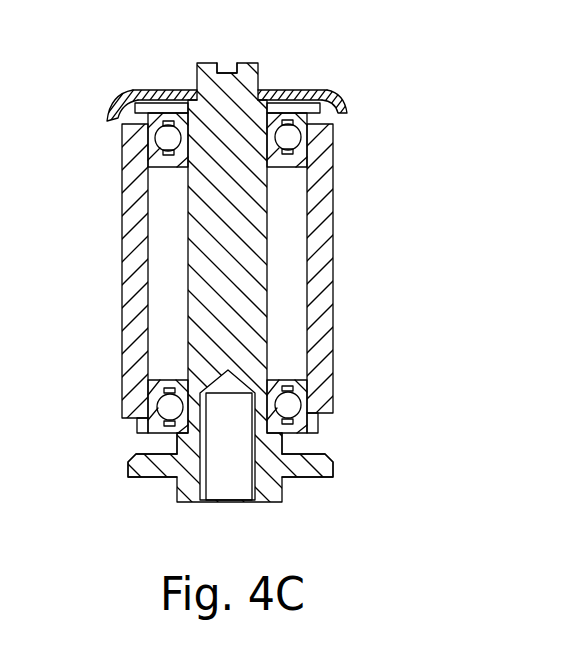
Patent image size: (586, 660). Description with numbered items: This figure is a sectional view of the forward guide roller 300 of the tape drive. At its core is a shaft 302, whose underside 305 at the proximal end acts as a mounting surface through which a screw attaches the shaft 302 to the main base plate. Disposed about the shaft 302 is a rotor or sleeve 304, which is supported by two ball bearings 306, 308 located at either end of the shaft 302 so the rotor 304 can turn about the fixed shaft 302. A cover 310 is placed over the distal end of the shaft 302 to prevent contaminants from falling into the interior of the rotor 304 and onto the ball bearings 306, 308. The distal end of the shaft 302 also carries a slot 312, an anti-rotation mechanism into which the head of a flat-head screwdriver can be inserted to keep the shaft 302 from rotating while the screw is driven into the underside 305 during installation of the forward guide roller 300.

The forward guide roller 300 is at (293, 330).
The shaft 302 is at (203, 233).
The rotor 304 is at (320, 252).
The underside 305 is at (145, 465).
The ball bearing 306 is at (137, 90).
The ball bearing 308 is at (138, 424).
The cover 310 is at (164, 90).
The slot 312 is at (231, 63).